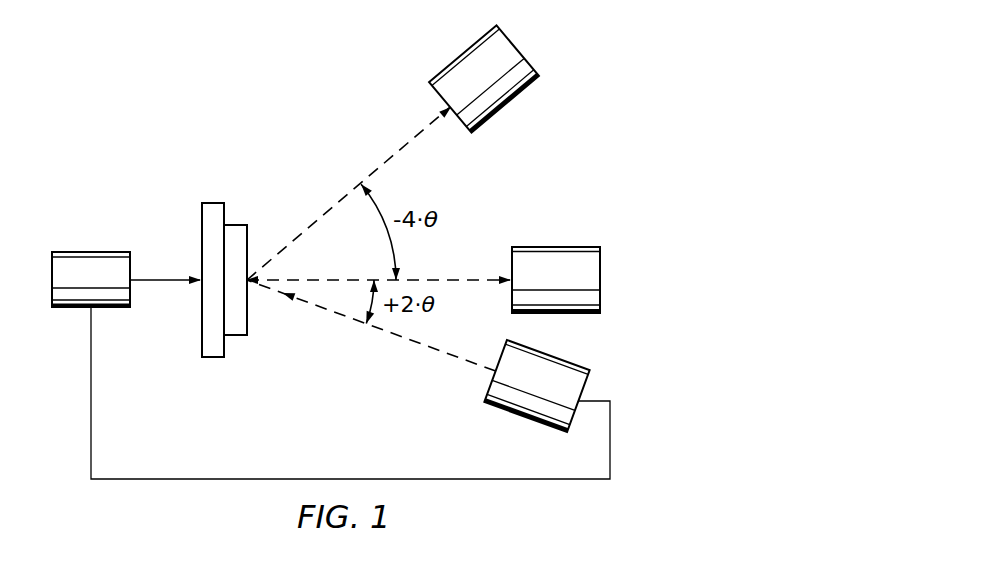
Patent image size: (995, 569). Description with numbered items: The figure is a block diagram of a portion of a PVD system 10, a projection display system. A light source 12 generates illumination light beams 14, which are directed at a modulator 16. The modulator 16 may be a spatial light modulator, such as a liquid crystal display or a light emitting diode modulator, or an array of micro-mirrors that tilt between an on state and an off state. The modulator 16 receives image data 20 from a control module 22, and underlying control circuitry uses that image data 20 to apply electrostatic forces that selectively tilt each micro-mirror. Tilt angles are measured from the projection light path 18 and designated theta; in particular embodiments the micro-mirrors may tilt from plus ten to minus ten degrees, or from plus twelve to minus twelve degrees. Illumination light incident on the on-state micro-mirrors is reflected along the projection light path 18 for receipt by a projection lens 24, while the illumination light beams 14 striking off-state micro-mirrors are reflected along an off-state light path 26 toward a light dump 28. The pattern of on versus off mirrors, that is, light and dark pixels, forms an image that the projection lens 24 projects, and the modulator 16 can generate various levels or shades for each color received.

The PVD system 10 is at (240, 62).
The light source 12 is at (525, 418).
The illumination light beams 14 is at (428, 348).
The modulator 16 is at (215, 203).
The projection light path 18 is at (452, 278).
The image data 20 is at (168, 276).
The control module 22 is at (80, 252).
The projection lens 24 is at (555, 247).
The off-state light path 26 is at (392, 157).
The light dump 28 is at (463, 55).